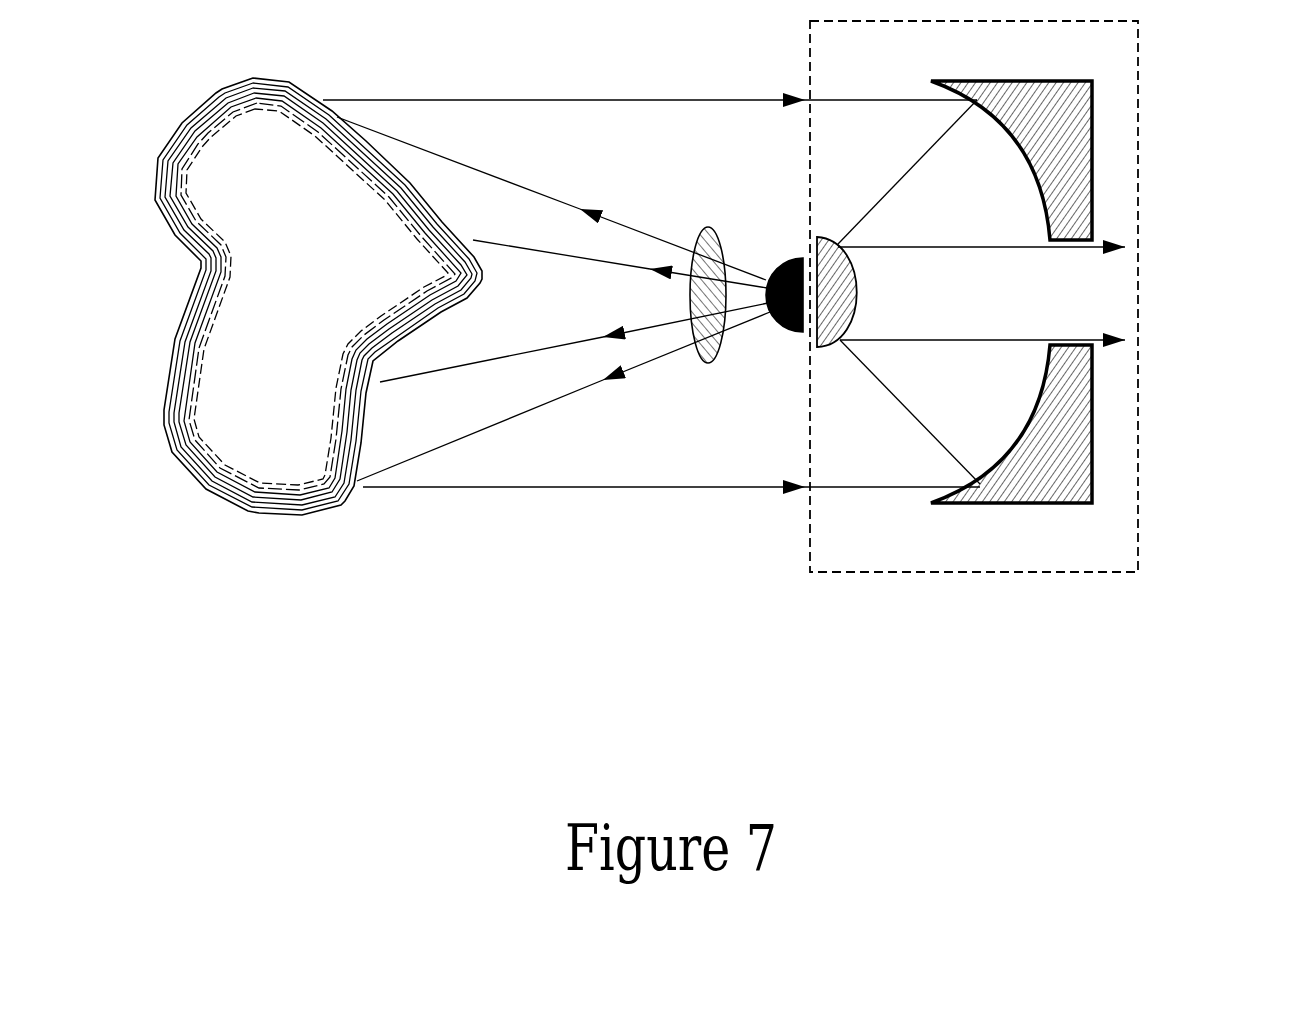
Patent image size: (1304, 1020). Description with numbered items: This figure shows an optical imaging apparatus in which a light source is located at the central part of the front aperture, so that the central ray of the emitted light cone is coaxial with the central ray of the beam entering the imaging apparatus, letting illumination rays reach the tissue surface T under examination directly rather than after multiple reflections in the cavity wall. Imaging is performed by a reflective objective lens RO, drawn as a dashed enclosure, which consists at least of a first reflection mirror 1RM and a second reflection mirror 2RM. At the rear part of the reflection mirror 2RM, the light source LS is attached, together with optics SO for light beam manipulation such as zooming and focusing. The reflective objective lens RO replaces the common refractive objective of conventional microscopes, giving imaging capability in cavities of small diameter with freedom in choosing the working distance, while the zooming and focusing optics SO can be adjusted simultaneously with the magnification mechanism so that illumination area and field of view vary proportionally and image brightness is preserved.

The target object T is at (276, 508).
The optics for light beam manipulation SO is at (707, 357).
The light source LS is at (790, 332).
The reflective objective lens RO is at (1140, 490).
The second reflection mirror 2RM is at (836, 350).
The first reflection mirror 1RM is at (1070, 112).